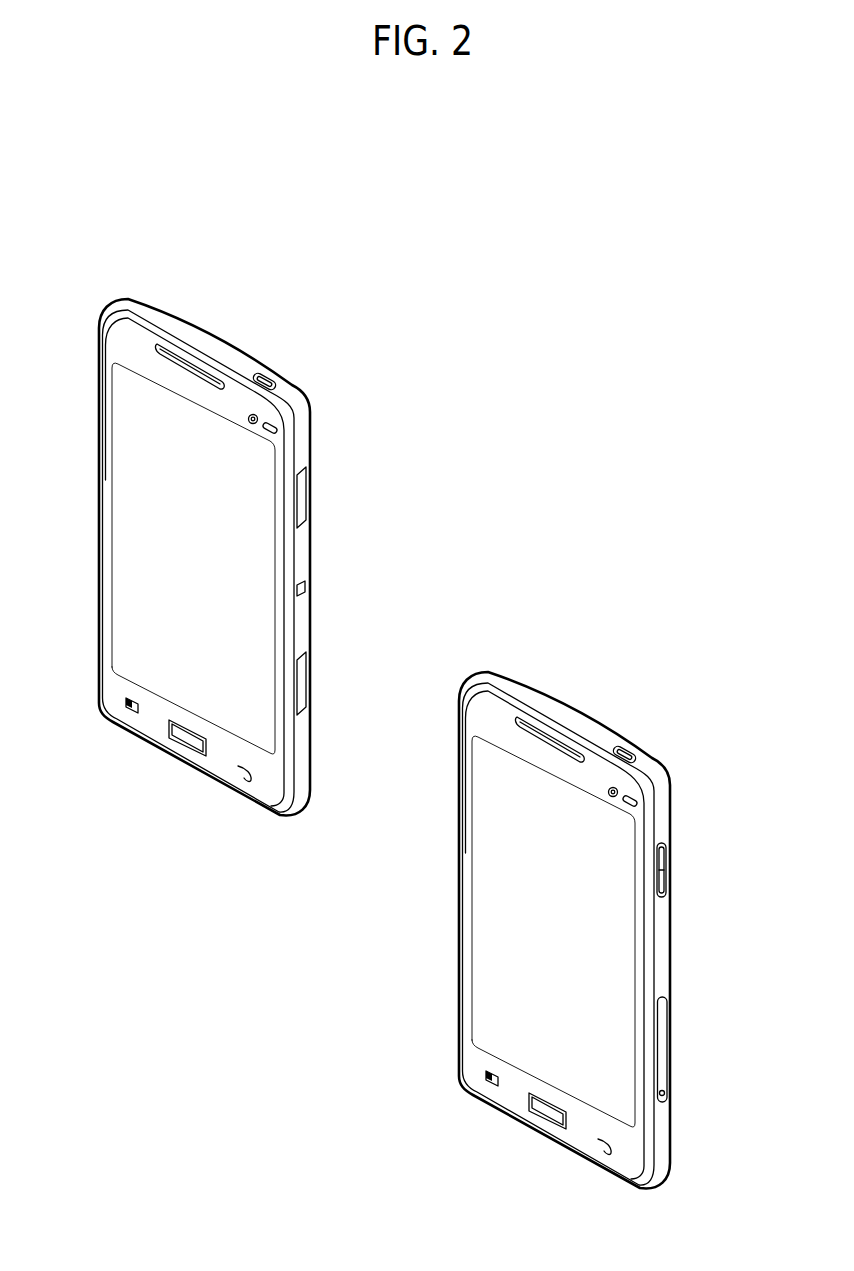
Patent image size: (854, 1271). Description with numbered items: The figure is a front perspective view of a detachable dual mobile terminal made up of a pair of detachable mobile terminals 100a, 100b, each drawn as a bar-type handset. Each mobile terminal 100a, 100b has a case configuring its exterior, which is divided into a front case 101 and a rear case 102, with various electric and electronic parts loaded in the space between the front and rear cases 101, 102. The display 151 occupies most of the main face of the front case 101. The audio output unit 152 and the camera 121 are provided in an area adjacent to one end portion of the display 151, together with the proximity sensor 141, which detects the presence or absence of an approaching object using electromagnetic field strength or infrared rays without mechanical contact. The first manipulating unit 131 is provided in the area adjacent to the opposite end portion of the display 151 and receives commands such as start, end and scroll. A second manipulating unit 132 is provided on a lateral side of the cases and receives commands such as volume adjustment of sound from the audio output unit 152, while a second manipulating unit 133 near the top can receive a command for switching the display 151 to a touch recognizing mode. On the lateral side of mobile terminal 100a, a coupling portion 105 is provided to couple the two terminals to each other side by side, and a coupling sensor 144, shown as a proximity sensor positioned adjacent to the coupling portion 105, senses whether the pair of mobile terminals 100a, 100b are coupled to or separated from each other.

The mobile terminal 100a is at (364, 328).
The mobile terminal 100b is at (629, 908).
The front case 101 is at (288, 785).
The rear case 102 is at (303, 412).
The coupling portion 105 is at (303, 677).
The camera 121 is at (258, 418).
The first manipulating unit 131 is at (191, 742).
The second manipulating unit 132 is at (696, 870).
The second manipulating unit 133 is at (267, 375).
The proximity sensor 141 is at (277, 432).
The coupling sensor 144 is at (303, 588).
The display 151 is at (124, 535).
The audio output unit 152 is at (190, 363).